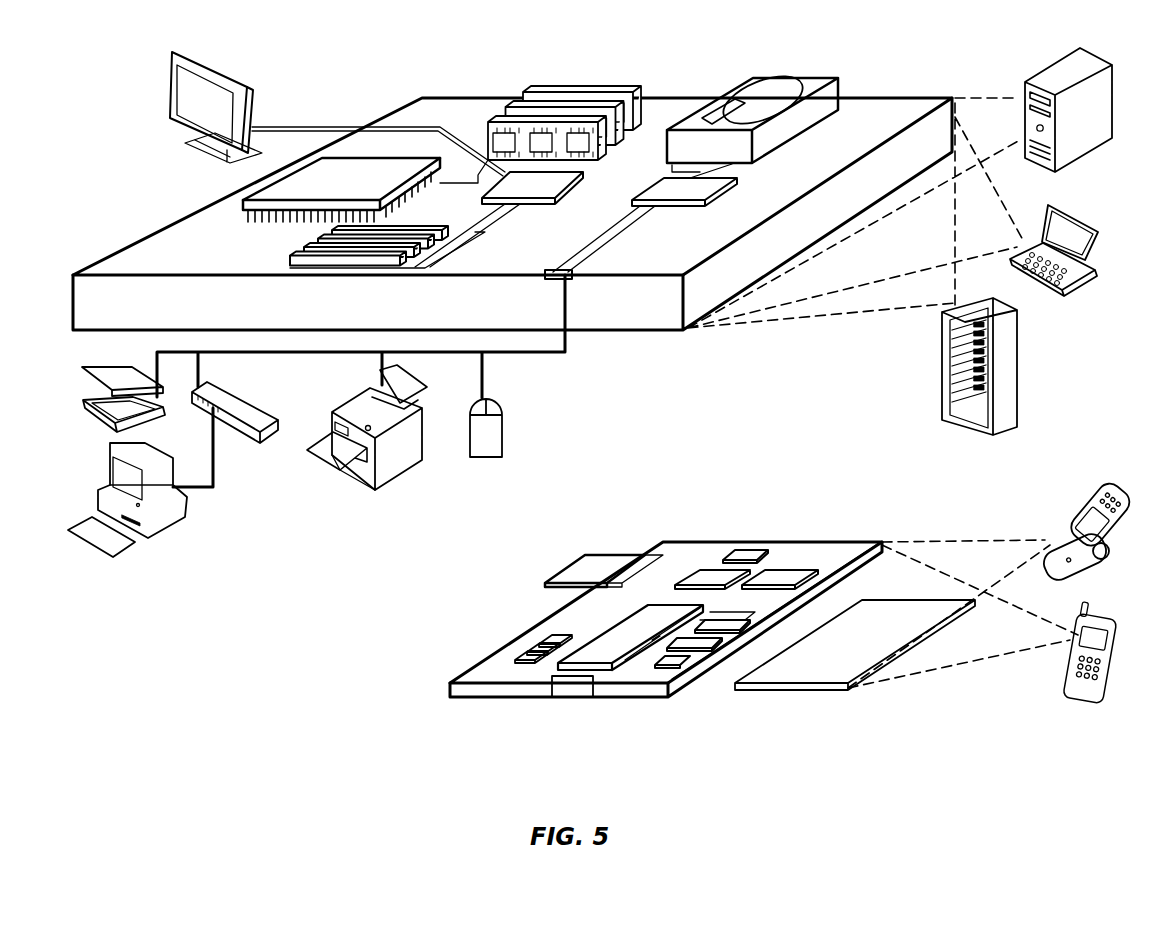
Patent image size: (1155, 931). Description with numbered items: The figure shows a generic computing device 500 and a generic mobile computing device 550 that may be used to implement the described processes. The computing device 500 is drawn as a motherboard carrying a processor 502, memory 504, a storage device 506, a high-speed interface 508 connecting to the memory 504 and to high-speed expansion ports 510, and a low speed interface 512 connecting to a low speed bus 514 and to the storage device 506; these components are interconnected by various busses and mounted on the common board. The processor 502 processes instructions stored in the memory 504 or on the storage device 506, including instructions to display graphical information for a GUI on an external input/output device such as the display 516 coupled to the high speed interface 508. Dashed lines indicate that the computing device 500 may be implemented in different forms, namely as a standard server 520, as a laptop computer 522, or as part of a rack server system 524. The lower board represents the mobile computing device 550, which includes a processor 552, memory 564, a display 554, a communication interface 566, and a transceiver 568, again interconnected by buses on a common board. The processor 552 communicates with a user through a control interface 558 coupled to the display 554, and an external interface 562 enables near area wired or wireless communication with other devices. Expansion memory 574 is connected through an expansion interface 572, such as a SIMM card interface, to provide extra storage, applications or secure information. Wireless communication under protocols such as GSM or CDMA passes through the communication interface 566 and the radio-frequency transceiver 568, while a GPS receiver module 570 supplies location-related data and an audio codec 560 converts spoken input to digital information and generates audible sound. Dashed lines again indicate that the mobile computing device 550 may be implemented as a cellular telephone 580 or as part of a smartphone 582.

The computing device 500 is at (356, 74).
The processor 502 is at (243, 201).
The memory 504 is at (542, 90).
The storage device 506 is at (744, 80).
The high-speed interface 508 is at (510, 186).
The high-speed expansion ports 510 is at (313, 250).
The low speed interface 512 is at (678, 190).
The low speed bus 514 is at (572, 280).
The display 516 is at (174, 54).
The standard server 520 is at (1024, 84).
The laptop computer 522 is at (1048, 206).
The rack server system 524 is at (945, 388).
The mobile computing device 550 is at (647, 528).
The processor 552 is at (594, 669).
The display 554 is at (848, 689).
The control interface 558 is at (716, 630).
The audio codec 560 is at (722, 632).
The external interface 562 is at (575, 684).
The memory 564 is at (530, 650).
The communication interface 566 is at (708, 580).
The transceiver 568 is at (782, 580).
The GPS receiver module 570 is at (750, 556).
The expansion interface 572 is at (643, 556).
The expansion memory 574 is at (585, 555).
The cellular telephone 580 is at (1092, 490).
The smartphone 582 is at (1078, 618).